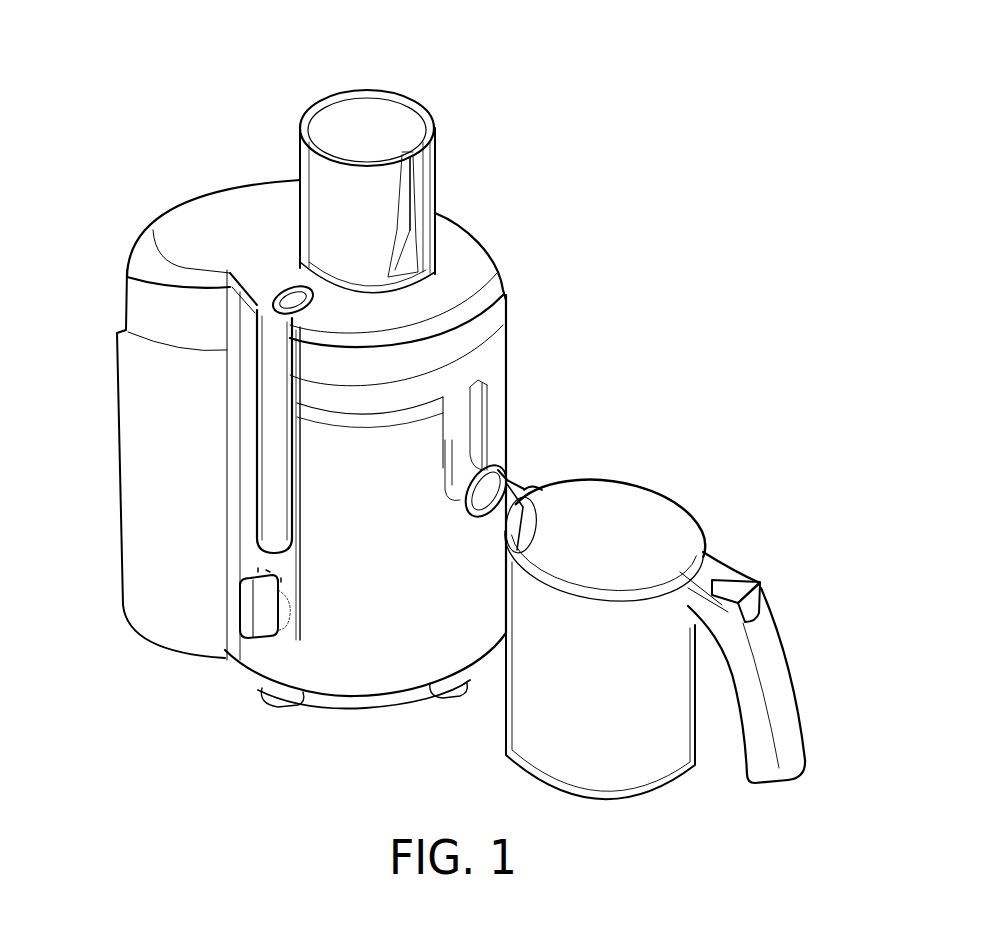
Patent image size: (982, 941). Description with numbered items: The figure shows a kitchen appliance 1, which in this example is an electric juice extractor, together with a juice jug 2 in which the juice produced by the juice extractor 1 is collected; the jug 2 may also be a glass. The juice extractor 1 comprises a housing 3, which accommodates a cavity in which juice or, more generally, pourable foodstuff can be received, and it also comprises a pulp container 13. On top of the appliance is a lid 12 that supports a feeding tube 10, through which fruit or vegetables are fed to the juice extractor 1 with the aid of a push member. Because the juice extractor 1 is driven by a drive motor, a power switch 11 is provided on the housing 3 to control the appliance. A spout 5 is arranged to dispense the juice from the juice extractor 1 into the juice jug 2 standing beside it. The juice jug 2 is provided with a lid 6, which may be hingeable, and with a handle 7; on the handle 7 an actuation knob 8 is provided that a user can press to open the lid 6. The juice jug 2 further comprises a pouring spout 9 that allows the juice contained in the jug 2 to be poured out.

The kitchen appliance 1 is at (615, 114).
The juice jug 2 is at (624, 449).
The housing 3 is at (343, 688).
The spout 5 is at (491, 493).
The lid 6 is at (678, 515).
The handle 7 is at (791, 704).
The actuation knob 8 is at (765, 598).
The pouring spout 9 is at (531, 526).
The feeding tube 10 is at (316, 173).
The power switch 11 is at (240, 609).
The lid 12 is at (491, 313).
The pulp container 13 is at (130, 452).